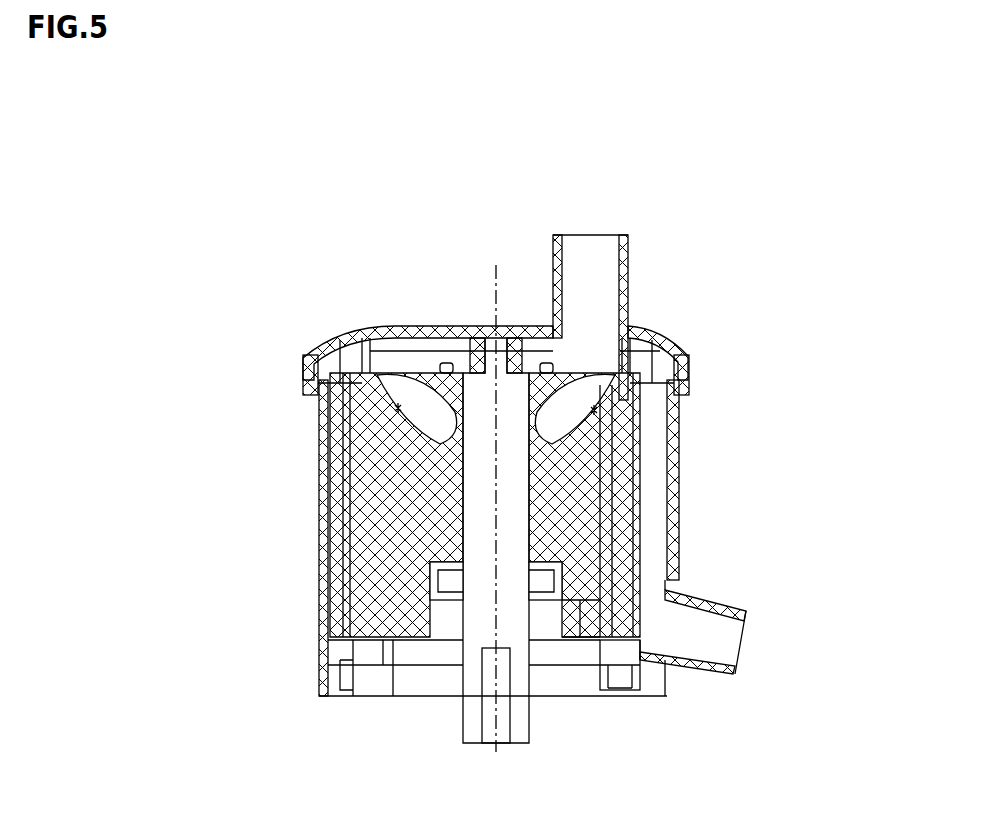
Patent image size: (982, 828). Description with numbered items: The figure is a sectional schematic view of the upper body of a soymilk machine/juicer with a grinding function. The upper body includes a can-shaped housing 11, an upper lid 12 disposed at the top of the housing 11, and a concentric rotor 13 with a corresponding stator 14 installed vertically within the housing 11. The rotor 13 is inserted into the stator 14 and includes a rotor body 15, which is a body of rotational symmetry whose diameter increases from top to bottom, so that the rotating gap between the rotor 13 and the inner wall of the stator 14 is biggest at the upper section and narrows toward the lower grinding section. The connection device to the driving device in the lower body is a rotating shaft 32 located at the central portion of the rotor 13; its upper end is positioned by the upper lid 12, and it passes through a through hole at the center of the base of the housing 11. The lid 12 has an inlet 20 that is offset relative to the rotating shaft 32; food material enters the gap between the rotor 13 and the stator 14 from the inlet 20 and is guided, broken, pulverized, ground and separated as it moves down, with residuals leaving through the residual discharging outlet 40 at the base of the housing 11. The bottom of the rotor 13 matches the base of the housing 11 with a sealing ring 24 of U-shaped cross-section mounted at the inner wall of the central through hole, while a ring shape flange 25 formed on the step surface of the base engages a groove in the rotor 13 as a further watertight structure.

The housing 11 is at (318, 612).
The lid 12 is at (353, 337).
The rotor 13 is at (375, 440).
The stator 14 is at (643, 480).
The rotor body 15 is at (365, 478).
The inlet 20 is at (598, 297).
The sealing ring 24 is at (640, 527).
The ring shape flange 25 is at (600, 625).
The rotating shaft 32 is at (490, 577).
The residual discharging outlet 40 is at (703, 637).